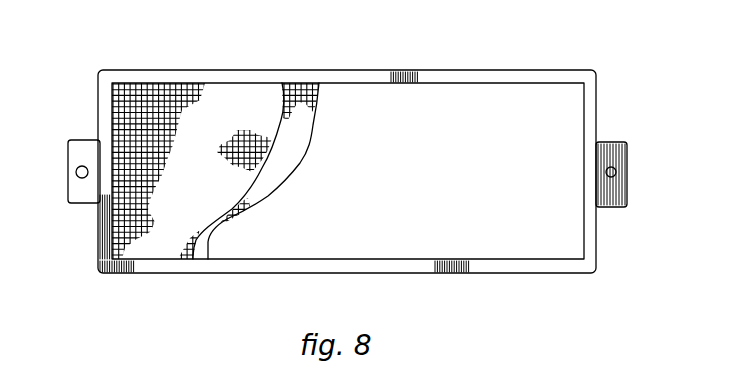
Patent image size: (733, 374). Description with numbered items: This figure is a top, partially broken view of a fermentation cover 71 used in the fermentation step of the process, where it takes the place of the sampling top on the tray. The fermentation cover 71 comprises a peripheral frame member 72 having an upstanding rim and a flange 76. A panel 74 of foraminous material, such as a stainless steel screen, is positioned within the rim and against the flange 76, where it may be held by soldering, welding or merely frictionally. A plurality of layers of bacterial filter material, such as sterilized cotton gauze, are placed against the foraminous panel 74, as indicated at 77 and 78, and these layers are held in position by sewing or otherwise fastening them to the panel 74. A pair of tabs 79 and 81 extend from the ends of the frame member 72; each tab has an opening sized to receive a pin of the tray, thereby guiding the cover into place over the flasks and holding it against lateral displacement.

The fermentation cover 71 is at (424, 66).
The peripheral frame member 72 is at (600, 276).
The panel of foraminous material 74 is at (127, 228).
The flange 76 is at (220, 265).
The layer of bacterial filter material 77 is at (240, 126).
The layer of bacterial filter material 78 is at (303, 82).
The tab 79 is at (615, 152).
The tab 81 is at (85, 143).